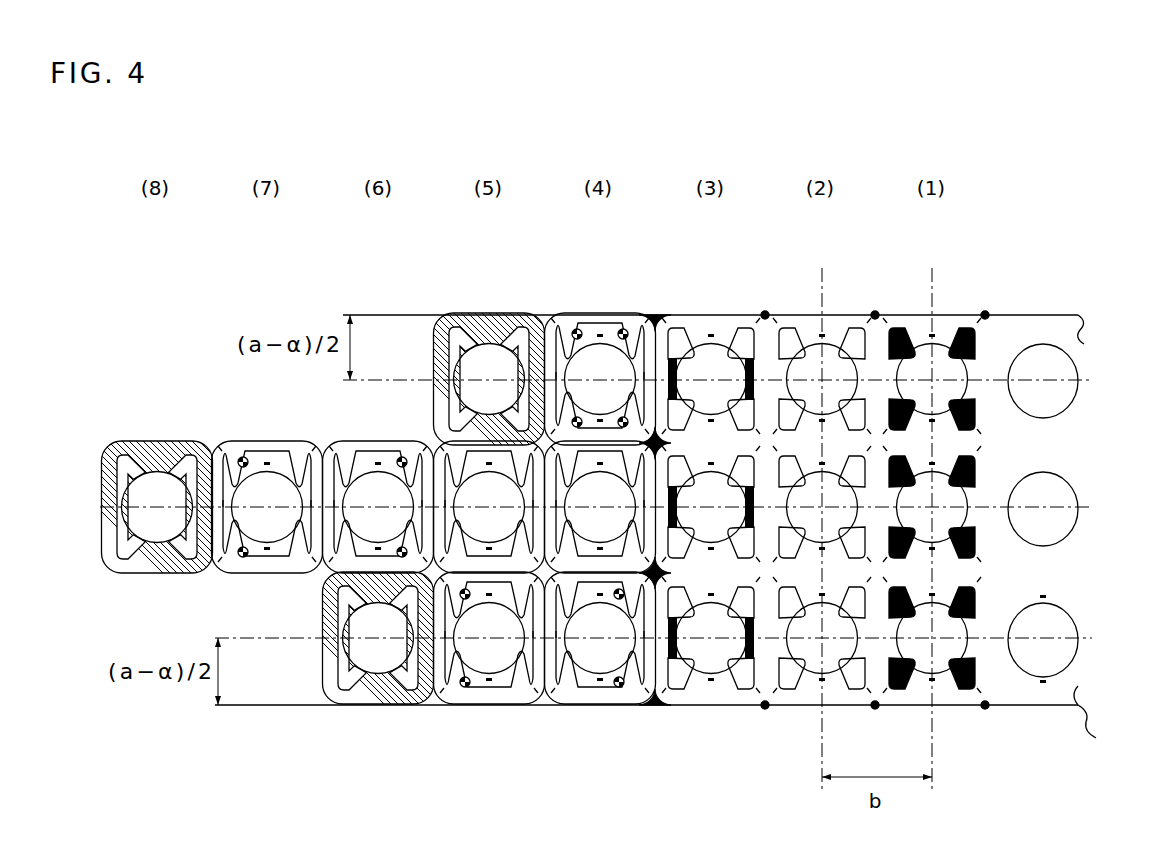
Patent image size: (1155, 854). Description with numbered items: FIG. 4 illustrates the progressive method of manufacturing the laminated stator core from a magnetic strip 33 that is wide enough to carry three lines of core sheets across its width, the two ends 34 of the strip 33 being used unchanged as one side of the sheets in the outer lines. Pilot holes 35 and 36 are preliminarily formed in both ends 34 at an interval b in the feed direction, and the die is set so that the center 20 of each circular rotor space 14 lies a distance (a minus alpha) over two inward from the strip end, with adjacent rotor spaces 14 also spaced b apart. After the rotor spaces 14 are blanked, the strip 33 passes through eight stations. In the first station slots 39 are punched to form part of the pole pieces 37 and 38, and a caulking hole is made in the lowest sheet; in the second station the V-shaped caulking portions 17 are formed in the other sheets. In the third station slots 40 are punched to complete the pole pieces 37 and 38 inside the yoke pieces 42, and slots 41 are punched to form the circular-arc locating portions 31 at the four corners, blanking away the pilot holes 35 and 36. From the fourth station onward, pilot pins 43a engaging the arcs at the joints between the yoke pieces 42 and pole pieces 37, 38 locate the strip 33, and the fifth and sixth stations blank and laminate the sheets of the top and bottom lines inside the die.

The rotor space 14 is at (1048, 362).
The caulking portion 17 is at (783, 333).
The center of the rotor space 20 is at (822, 370).
The locating portion 31 is at (320, 590).
The magnetic strip 33 is at (1086, 717).
The end of the strip 34 is at (1015, 312).
The pilot hole 35 is at (765, 311).
The pilot hole 36 is at (657, 709).
The pole piece 37 is at (590, 337).
The pole piece 38 is at (500, 318).
The slot 39 is at (910, 340).
The slot 40 is at (746, 355).
The slot 41 is at (656, 698).
The yoke piece 42 is at (612, 323).
The pilot pin 43a is at (577, 330).